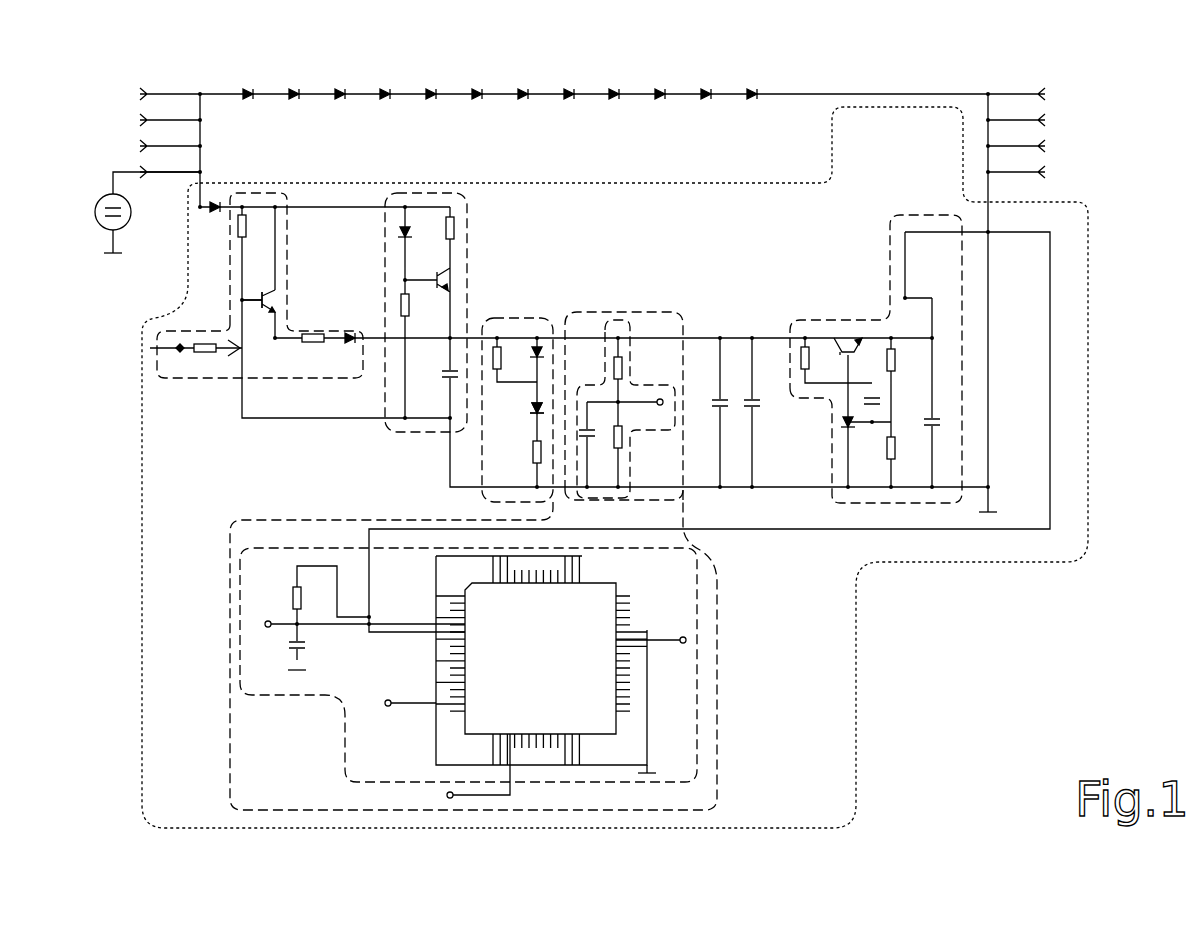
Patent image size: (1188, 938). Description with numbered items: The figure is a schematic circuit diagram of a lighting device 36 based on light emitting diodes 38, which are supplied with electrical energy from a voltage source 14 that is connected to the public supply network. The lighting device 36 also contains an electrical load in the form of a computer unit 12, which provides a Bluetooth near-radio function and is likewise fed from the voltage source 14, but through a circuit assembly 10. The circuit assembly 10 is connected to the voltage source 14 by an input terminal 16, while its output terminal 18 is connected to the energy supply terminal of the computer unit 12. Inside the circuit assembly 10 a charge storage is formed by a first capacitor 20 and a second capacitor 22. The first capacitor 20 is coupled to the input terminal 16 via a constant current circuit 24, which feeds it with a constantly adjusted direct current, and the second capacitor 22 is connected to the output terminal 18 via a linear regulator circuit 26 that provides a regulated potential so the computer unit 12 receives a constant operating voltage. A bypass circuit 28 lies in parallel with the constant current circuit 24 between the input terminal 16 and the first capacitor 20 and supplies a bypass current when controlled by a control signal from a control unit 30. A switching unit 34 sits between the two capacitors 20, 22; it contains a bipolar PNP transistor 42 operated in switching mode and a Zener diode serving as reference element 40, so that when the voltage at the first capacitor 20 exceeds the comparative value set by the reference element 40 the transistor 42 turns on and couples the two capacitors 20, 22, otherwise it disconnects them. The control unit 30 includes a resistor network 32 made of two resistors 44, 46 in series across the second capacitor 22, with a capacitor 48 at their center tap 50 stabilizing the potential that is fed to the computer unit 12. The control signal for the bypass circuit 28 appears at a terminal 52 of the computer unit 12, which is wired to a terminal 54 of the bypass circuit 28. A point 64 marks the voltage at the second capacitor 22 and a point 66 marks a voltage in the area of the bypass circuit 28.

The circuit assembly 10 is at (1090, 262).
The computer unit 12 is at (620, 598).
The voltage source 14 is at (113, 194).
The input terminal 16 is at (192, 186).
The output terminal 18 is at (963, 232).
The first capacitor 20 is at (450, 380).
The second capacitor 22 is at (753, 372).
The constant current circuit 24 is at (426, 193).
The linear regulator circuit 26 is at (925, 215).
The bypass circuit 28 is at (218, 378).
The control unit 30 is at (718, 668).
The resistor network 32 is at (616, 338).
The switching unit 34 is at (515, 318).
The lighting device 36 is at (995, 82).
The light emitting diodes 38 is at (594, 82).
The reference element 40 is at (534, 412).
The transistor 42 is at (537, 345).
The resistor 44 is at (624, 366).
The resistor 46 is at (626, 438).
The capacitor 48 is at (588, 440).
The center tap 50 is at (668, 382).
The terminal 52 is at (390, 702).
The terminal 54 is at (152, 348).
The point 64 is at (720, 338).
The point 66 is at (286, 340).